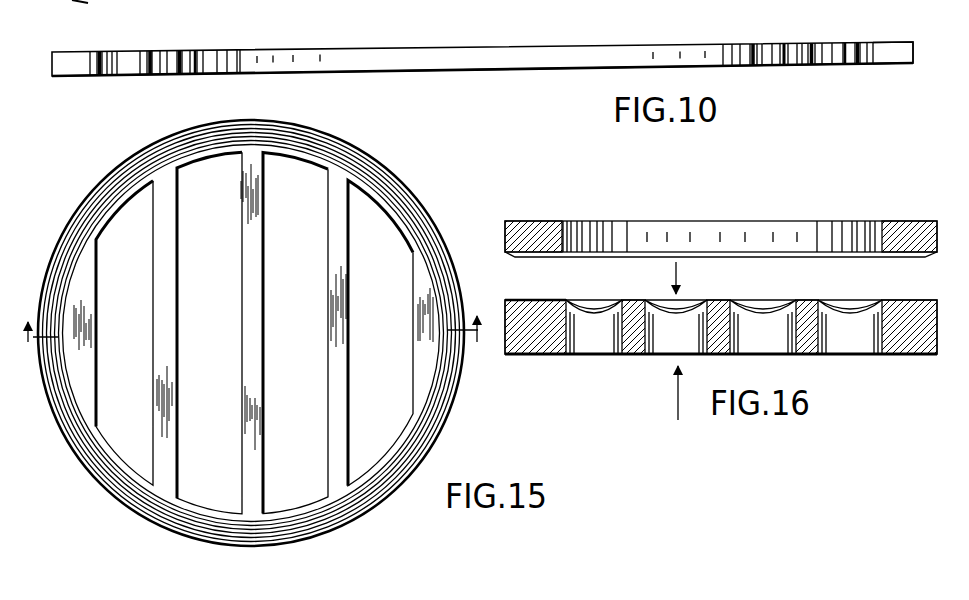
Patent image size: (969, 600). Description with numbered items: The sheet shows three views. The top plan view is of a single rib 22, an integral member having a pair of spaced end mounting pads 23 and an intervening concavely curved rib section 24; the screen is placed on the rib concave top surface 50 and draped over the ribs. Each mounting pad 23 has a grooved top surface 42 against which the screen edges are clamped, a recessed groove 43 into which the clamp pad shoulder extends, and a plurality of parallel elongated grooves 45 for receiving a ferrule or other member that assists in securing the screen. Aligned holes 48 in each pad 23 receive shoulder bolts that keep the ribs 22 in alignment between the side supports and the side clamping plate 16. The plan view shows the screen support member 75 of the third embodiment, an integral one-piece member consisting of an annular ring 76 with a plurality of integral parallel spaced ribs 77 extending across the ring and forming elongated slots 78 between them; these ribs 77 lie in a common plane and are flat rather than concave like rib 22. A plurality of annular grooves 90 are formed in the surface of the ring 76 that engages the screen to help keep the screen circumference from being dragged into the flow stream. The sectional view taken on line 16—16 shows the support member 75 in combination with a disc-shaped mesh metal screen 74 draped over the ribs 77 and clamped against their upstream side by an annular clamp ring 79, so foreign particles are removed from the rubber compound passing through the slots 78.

In FIG. 10, the rib 22 is at (472, 72).
In FIG. 10, the end mounting pad 23 is at (845, 68).
In FIG. 10, the concavely curved rib section 24 is at (378, 58).
In FIG. 10, the grooved top surface 42 is at (805, 46).
In FIG. 10, the recessed groove 43 is at (122, 72).
In FIG. 10, the parallel elongated grooves 45 is at (182, 60).
In FIG. 10, the aligned holes 48 is at (112, 56).
In FIG. 10, the rib concave top surface 50 is at (575, 47).
In FIG. 15, the side clamping plate 16 is at (255, 338).
In FIG. 16, the mesh metal screen 74 is at (745, 300).
In FIG. 16, the screen support member 75 is at (674, 407).
In FIG. 15, the annular ring 76 is at (168, 148).
In FIG. 16, the annular ring 76 is at (655, 355).
In FIG. 15, the ribs 77 is at (340, 246).
In FIG. 16, the ribs 77 is at (633, 307).
In FIG. 15, the elongated slots 78 is at (205, 240).
In FIG. 16, the elongated slots 78 is at (585, 332).
In FIG. 16, the annular clamp ring 79 is at (695, 240).
In FIG. 15, the annular grooves 90 is at (382, 180).
In FIG. 16, the annular grooves 90 is at (515, 300).